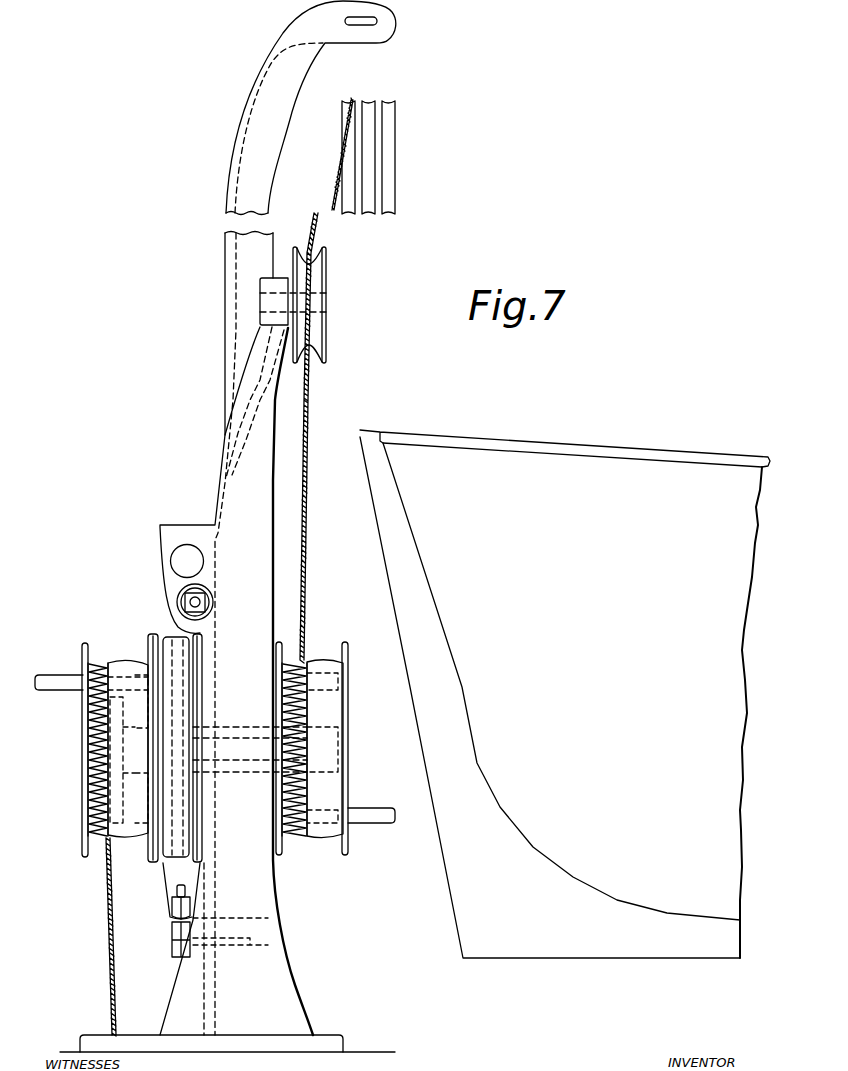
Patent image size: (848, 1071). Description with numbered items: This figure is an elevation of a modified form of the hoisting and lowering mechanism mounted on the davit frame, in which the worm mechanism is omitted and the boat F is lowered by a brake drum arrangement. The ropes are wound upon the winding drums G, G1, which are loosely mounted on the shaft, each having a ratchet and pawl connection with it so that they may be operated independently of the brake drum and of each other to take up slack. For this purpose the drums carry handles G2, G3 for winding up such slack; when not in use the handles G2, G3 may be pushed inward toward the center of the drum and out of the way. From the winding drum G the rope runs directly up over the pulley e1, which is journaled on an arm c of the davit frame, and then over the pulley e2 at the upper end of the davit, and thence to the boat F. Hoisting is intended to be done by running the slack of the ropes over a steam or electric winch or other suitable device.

The arm c is at (226, 396).
The pulley e1 is at (323, 337).
The pulley e2 is at (388, 187).
The winding drum G is at (342, 742).
The winding drum G1 is at (87, 857).
The handle G2 is at (382, 820).
The handle G3 is at (45, 680).
The boat F is at (565, 694).